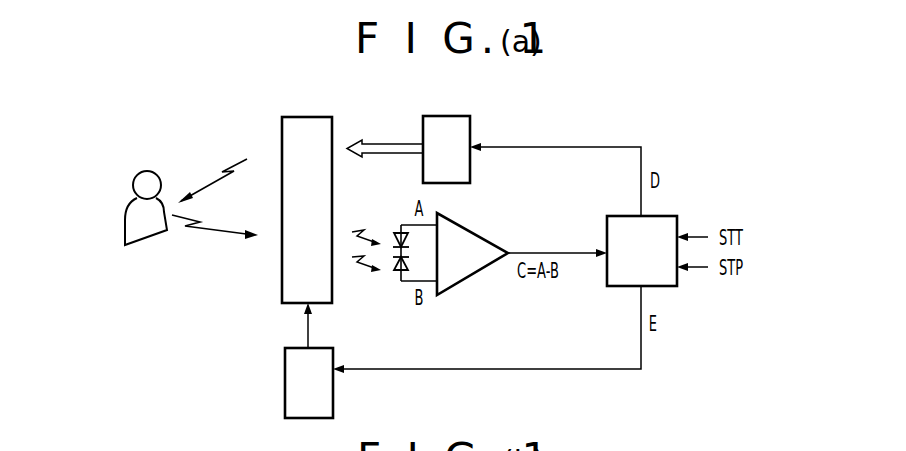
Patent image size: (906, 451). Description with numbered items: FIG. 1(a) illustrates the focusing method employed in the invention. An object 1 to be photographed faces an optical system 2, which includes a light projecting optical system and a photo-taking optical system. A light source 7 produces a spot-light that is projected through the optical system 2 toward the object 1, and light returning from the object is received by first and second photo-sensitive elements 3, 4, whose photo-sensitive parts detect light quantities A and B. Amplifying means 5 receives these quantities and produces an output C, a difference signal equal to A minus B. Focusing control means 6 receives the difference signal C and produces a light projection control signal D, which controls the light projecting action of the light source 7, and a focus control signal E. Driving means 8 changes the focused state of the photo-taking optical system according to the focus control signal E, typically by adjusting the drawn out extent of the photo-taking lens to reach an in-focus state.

The object 1 is at (158, 175).
The optical system 2 is at (333, 124).
The first photo-sensitive element 3 is at (394, 232).
The second photo-sensitive element 4 is at (397, 270).
The amplifying means 5 is at (486, 239).
The focusing control means 6 is at (668, 215).
The light source 7 is at (472, 126).
The driving means 8 is at (295, 418).